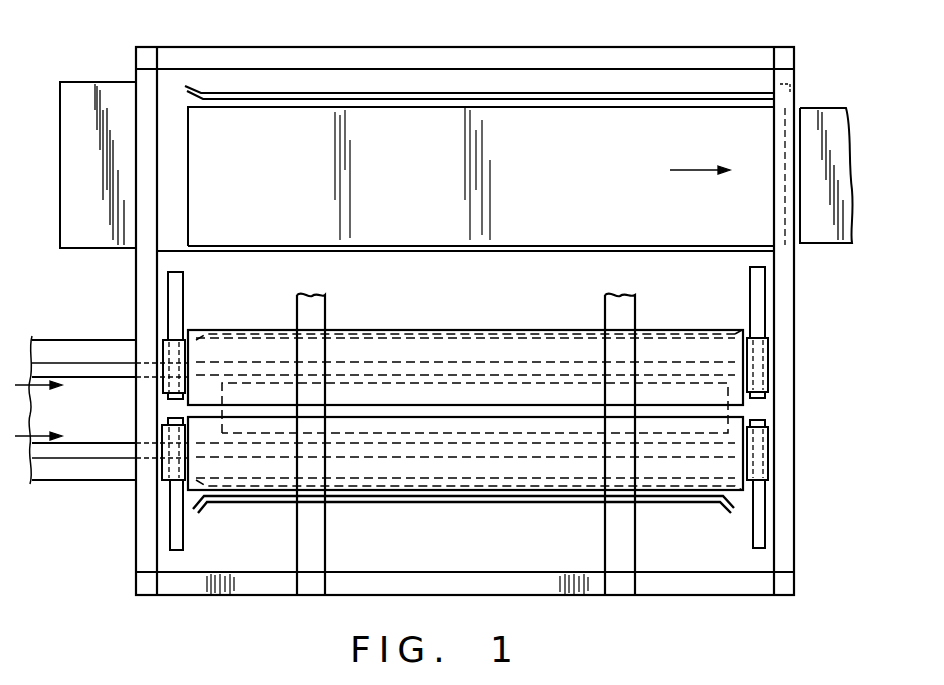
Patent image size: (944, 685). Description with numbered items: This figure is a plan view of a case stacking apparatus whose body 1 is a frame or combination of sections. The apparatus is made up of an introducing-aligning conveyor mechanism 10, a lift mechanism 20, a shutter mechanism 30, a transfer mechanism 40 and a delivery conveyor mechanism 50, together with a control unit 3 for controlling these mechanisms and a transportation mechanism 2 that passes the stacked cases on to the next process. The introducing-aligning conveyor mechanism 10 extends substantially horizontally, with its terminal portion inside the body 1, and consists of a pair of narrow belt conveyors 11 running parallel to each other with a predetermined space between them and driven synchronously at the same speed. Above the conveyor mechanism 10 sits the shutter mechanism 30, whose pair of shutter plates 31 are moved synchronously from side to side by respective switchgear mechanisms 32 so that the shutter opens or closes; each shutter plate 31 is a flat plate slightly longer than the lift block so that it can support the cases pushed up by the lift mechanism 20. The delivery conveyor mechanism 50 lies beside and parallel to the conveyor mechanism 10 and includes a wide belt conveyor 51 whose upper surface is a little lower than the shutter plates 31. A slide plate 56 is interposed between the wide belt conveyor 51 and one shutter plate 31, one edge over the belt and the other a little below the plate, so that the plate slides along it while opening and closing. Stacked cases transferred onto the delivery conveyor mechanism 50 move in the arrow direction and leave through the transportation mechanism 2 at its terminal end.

The body 1 is at (645, 43).
The transportation mechanism 2 is at (830, 241).
The control unit 3 is at (81, 211).
The introducing-aligning conveyor mechanism 10 is at (116, 494).
The belt conveyors 11 is at (85, 366).
The lift mechanism 20 is at (470, 390).
The shutter mechanism 30 is at (772, 325).
The shutter plates 31 is at (678, 329).
The switchgear mechanisms 32 is at (163, 386).
The transfer mechanism 40 is at (517, 505).
The delivery conveyor mechanism 50 is at (732, 140).
The wide belt conveyor 51 is at (528, 125).
The slide plate 56 is at (280, 270).